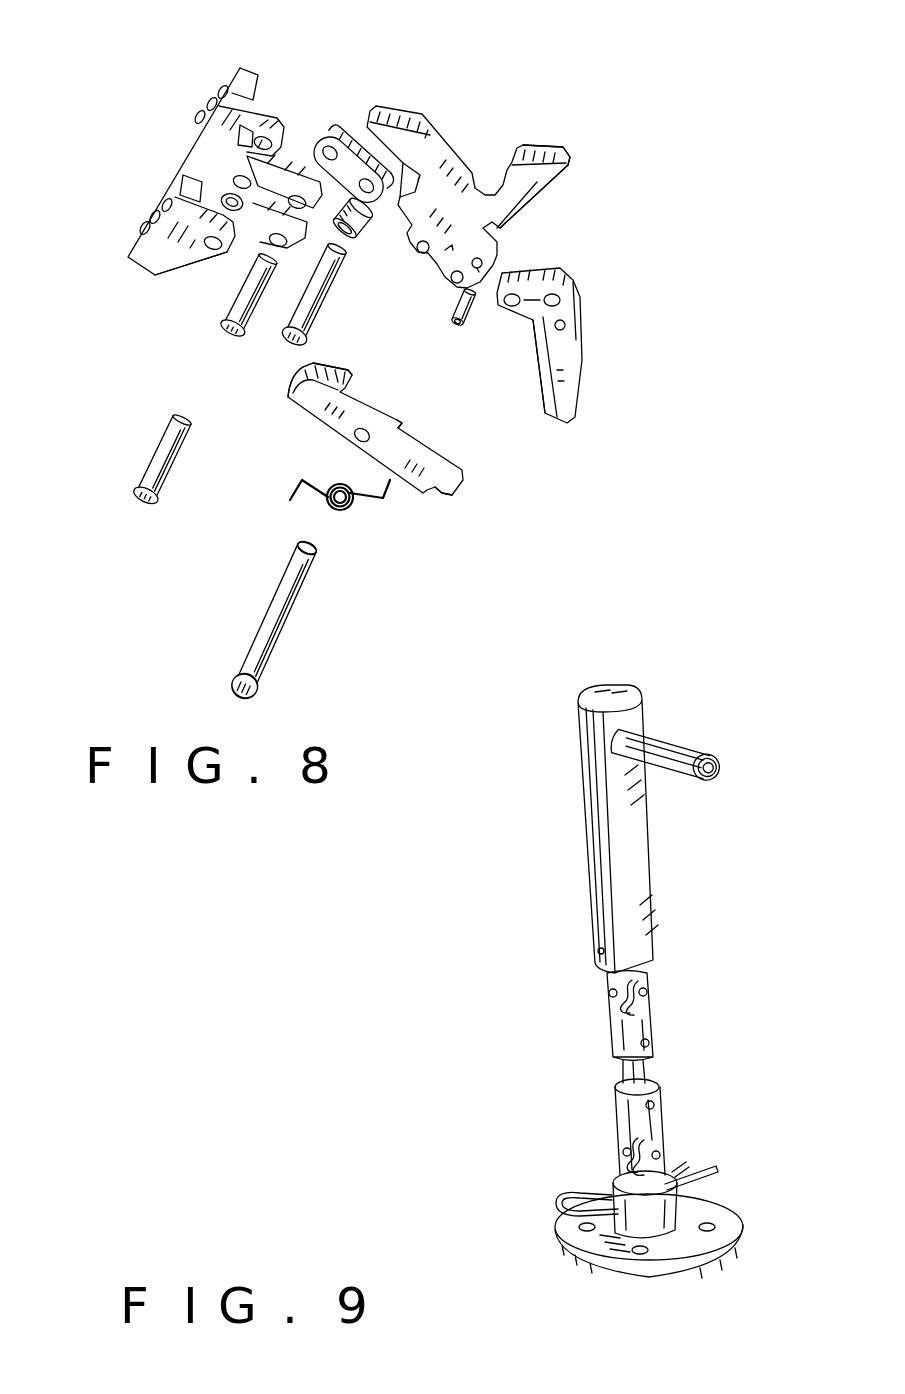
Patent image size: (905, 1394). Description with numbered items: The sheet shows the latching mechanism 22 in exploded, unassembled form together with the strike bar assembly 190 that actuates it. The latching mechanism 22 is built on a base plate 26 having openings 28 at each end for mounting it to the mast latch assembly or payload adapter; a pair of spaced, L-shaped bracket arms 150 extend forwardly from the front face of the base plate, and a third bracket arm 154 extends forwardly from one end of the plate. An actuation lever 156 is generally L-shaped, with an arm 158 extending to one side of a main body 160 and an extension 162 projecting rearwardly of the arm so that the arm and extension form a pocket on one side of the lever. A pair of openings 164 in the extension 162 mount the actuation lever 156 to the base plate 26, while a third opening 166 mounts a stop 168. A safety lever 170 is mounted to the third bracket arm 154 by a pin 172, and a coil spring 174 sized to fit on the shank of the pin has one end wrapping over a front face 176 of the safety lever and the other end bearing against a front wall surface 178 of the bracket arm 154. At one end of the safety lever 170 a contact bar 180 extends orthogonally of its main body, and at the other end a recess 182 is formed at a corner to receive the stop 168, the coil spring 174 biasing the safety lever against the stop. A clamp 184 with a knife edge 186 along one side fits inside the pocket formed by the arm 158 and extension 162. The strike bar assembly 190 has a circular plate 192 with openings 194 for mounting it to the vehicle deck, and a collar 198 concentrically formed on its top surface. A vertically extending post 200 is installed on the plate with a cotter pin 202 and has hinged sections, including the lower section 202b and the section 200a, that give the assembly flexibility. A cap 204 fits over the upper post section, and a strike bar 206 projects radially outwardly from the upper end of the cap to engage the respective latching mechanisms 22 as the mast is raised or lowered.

In FIG. 8, the latching mechanism 22 is at (593, 480).
In FIG. 8, the base plate 26 is at (193, 142).
In FIG. 8, the openings 28 is at (222, 84).
In FIG. 8, the L-shaped bracket arms 150 is at (258, 130).
In FIG. 8, the third bracket arm 154 is at (153, 268).
In FIG. 8, the actuation lever 156 is at (465, 152).
In FIG. 8, the arm 158 is at (463, 205).
In FIG. 8, the main body 160 is at (537, 183).
In FIG. 8, the extension 162 is at (452, 246).
In FIG. 8, the openings 164 is at (432, 263).
In FIG. 8, the third opening 166 is at (483, 275).
In FIG. 8, the stop 168 is at (454, 326).
In FIG. 8, the safety lever 170 is at (313, 418).
In FIG. 8, the pin 172 is at (290, 618).
In FIG. 8, the coil spring 174 is at (340, 512).
In FIG. 8, the front face 176 is at (437, 460).
In FIG. 8, the front wall surface 178 is at (192, 273).
In FIG. 8, the contact bar 180 is at (321, 363).
In FIG. 8, the recess 182 is at (430, 493).
In FIG. 8, the clamp 184 is at (580, 330).
In FIG. 8, the knife edge 186 is at (537, 367).
In FIG. 9, the strike bar assembly 190 is at (558, 944).
In FIG. 9, the circular plate 192 is at (600, 1262).
In FIG. 9, the openings 194 is at (578, 1227).
In FIG. 9, the collar 198 is at (680, 1197).
In FIG. 9, the post 200 is at (667, 1115).
In FIG. 9, the lower coupling sleeve 200a is at (618, 1122).
In FIG. 9, the cotter pin 202 is at (720, 1167).
In FIG. 9, the lower hinged section 202b is at (612, 1042).
In FIG. 9, the cap 204 is at (588, 866).
In FIG. 9, the strike bar 206 is at (700, 738).